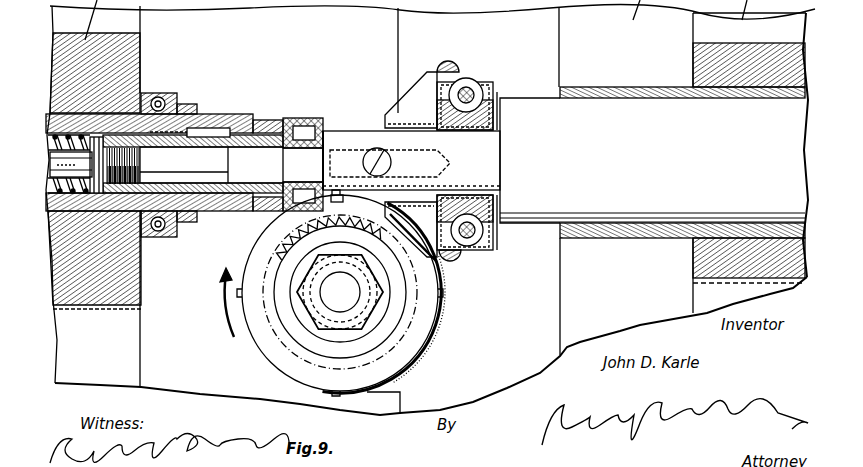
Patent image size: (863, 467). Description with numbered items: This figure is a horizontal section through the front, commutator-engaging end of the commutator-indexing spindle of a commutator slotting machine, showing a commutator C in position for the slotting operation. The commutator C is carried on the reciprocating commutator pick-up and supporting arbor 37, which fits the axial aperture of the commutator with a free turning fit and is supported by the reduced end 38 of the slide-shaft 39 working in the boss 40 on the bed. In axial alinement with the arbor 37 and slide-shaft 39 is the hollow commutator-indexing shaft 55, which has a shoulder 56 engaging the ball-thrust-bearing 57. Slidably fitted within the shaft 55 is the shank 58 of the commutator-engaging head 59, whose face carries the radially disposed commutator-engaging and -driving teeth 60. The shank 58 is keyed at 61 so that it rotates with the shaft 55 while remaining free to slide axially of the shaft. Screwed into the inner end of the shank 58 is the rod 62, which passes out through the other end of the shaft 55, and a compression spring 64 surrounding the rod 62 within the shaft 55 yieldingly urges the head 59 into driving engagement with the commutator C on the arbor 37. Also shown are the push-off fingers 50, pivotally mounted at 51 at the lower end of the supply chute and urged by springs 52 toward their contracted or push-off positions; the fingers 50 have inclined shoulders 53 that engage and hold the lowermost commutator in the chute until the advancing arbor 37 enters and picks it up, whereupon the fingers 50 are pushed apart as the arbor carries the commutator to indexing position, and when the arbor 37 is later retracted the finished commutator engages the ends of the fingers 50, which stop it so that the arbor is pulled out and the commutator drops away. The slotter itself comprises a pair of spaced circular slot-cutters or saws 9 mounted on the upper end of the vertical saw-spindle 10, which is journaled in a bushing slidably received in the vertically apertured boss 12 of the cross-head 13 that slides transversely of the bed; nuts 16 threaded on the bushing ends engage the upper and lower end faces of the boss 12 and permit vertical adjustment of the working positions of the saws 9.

The circular slot-cutters or saws 9 is at (283, 243).
The vertical saw-spindle 10 is at (352, 297).
The vertically apertured boss 12 is at (268, 357).
The cross-head 13 is at (548, 278).
The nuts 16 is at (413, 333).
The commutator pick-up and supporting arbor 37 is at (318, 157).
The reduced end of the slide-shaft 38 is at (350, 135).
The slide-shaft 39 is at (592, 108).
The boss 40 is at (703, 62).
The push-off fingers 50 is at (395, 118).
The pivot of the push-off fingers 51 is at (467, 88).
The springs 52 is at (447, 66).
The inclined shoulders 53 is at (481, 113).
The commutator-indexing shaft 55 is at (100, 207).
The shoulder 56 is at (178, 95).
The ball-thrust-bearing 57 is at (158, 97).
The shank 58 is at (178, 130).
The commutator-engaging head 59 is at (262, 120).
The commutator-engaging and -driving teeth 60 is at (288, 120).
The key 61 is at (212, 130).
The rod 62 is at (60, 160).
The compression spring 64 is at (58, 182).
The commutator C is at (305, 125).